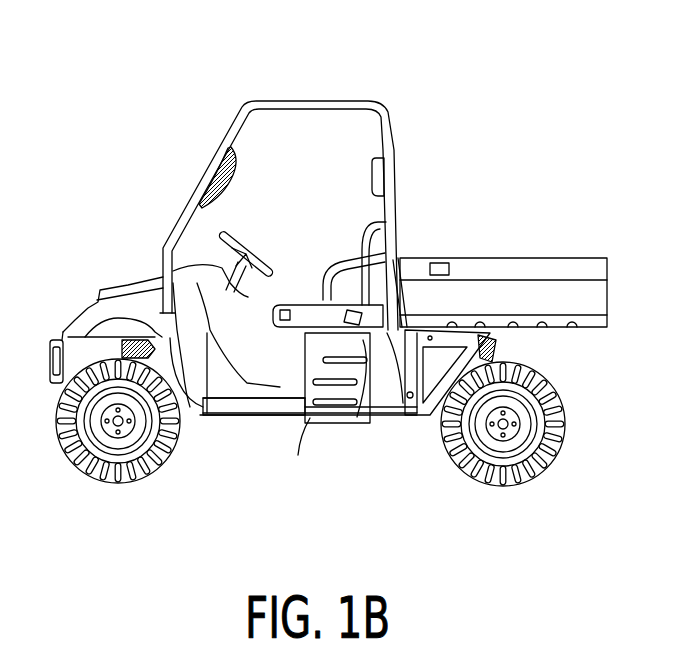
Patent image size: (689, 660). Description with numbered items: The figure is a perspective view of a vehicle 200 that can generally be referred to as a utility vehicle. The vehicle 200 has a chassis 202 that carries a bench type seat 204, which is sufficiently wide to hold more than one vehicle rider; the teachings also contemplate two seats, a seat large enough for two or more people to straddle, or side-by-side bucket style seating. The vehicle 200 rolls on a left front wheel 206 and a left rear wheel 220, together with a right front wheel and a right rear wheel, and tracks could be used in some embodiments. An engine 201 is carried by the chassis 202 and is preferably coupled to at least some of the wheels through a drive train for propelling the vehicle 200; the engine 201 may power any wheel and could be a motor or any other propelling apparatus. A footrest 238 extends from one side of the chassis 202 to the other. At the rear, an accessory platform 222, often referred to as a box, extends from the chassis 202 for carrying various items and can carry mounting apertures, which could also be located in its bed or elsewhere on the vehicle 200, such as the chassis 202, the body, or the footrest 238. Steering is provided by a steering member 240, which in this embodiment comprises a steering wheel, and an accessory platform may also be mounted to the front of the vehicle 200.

The vehicle 200 is at (331, 303).
The steering member 240 is at (228, 232).
The bench type seat 204 is at (307, 310).
The accessory platform 222 is at (586, 258).
The chassis 202 is at (386, 413).
The engine 201 is at (318, 427).
The footrest 238 is at (243, 405).
The left front wheel 206 is at (78, 468).
The left rear wheel 220 is at (519, 486).